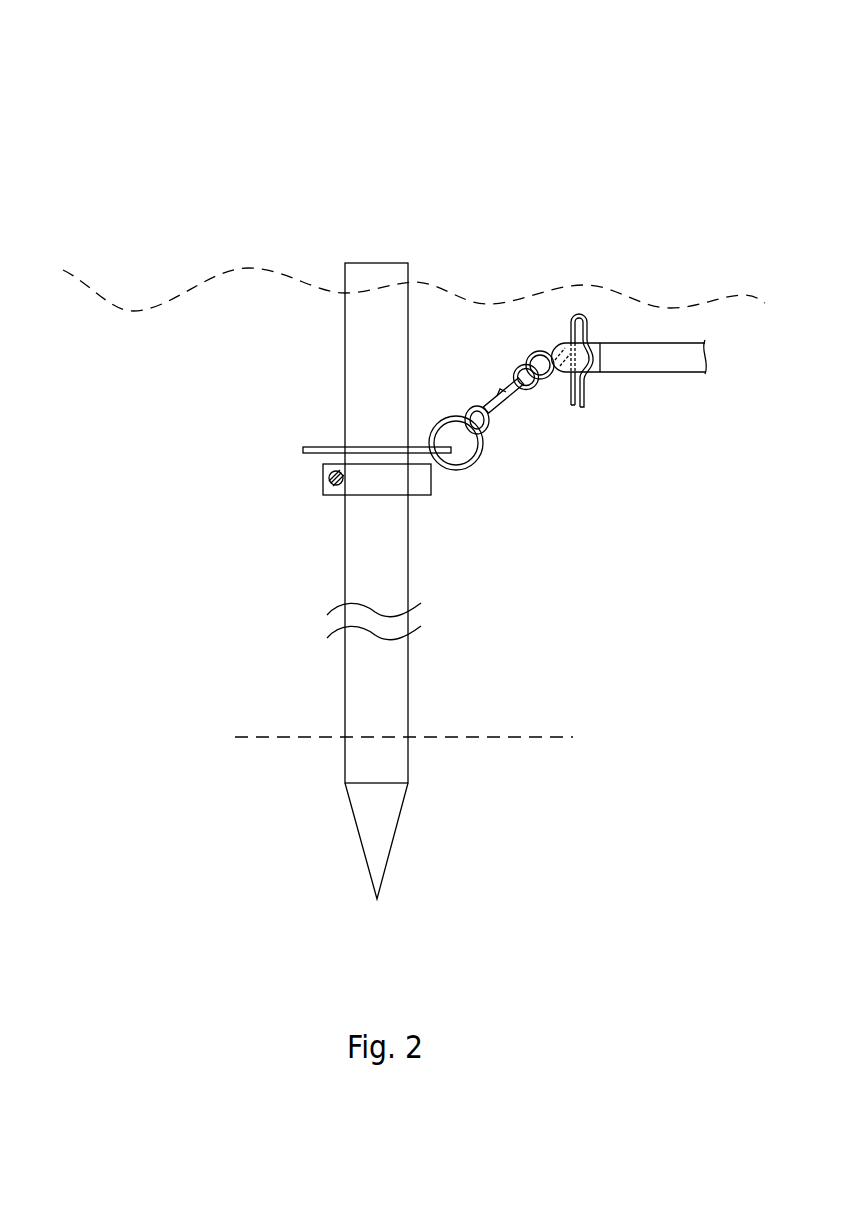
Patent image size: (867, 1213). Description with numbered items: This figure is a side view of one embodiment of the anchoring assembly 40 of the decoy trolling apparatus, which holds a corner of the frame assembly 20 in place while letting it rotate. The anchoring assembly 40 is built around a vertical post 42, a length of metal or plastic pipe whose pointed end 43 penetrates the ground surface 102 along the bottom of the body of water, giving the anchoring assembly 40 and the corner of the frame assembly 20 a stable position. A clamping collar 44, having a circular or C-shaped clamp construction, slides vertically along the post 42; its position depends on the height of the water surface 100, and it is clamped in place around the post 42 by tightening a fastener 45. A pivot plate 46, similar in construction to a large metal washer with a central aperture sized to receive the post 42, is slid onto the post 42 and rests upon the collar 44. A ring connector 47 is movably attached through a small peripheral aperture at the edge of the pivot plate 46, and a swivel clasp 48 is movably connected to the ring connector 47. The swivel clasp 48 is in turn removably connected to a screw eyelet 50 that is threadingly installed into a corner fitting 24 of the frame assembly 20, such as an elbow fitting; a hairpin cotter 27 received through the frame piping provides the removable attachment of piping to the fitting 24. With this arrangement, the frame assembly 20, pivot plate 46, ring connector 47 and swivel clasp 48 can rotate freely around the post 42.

The frame assembly 20 is at (656, 373).
The interconnecting fitting 24 is at (594, 354).
The hairpin cotter 27 is at (581, 408).
The anchoring assembly 40 is at (118, 133).
The vertical post 42 is at (408, 262).
The pointed end 43 is at (400, 832).
The clamping collar 44 is at (323, 480).
The fastener 45 is at (333, 485).
The pivot plate 46 is at (305, 447).
The ring connector 47 is at (467, 471).
The swivel clasp 48 is at (508, 396).
The screw eyelet 50 is at (538, 352).
The water surface 100 is at (131, 308).
The ground surface 102 is at (524, 735).